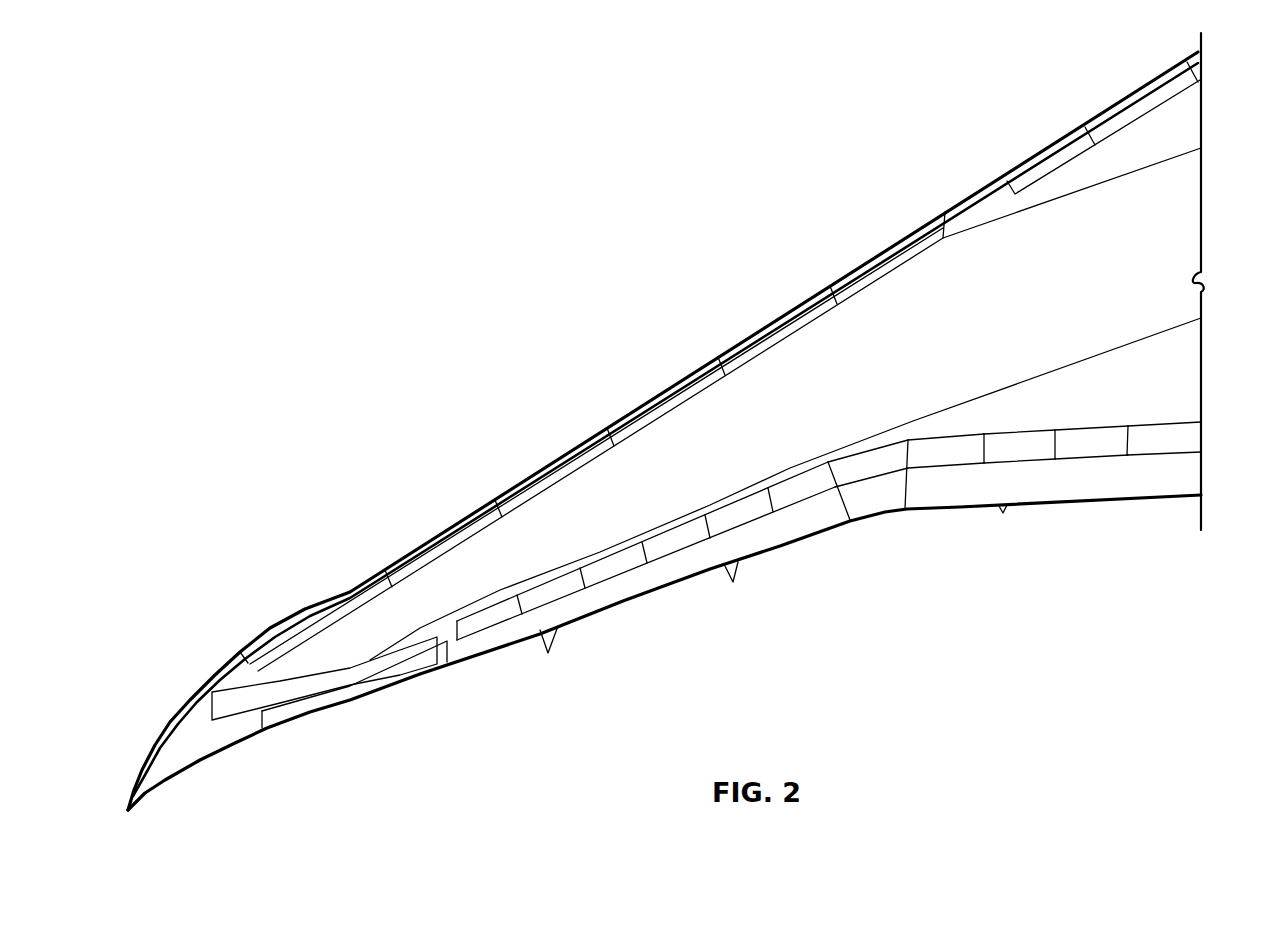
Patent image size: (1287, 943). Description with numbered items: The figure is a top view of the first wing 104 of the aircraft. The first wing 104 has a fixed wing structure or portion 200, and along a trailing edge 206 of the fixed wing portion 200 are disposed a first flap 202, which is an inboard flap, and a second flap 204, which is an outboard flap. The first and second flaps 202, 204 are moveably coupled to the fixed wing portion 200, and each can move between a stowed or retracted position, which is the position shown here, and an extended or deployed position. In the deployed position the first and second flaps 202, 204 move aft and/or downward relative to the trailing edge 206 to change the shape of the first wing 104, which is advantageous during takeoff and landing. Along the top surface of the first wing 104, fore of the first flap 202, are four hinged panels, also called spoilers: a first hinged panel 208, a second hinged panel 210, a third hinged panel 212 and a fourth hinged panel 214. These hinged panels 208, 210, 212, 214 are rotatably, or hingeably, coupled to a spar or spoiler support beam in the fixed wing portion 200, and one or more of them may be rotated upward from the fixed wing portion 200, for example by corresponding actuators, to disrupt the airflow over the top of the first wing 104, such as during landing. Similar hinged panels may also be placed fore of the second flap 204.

The first wing 104 is at (508, 188).
The fixed wing portion 200 is at (1186, 250).
The first flap 202 is at (1055, 480).
The second flap 204 is at (693, 555).
The trailing edge 206 is at (878, 515).
The first hinged panel 208 is at (1153, 437).
The second hinged panel 210 is at (1087, 442).
The third hinged panel 212 is at (1011, 446).
The fourth hinged panel 214 is at (934, 460).